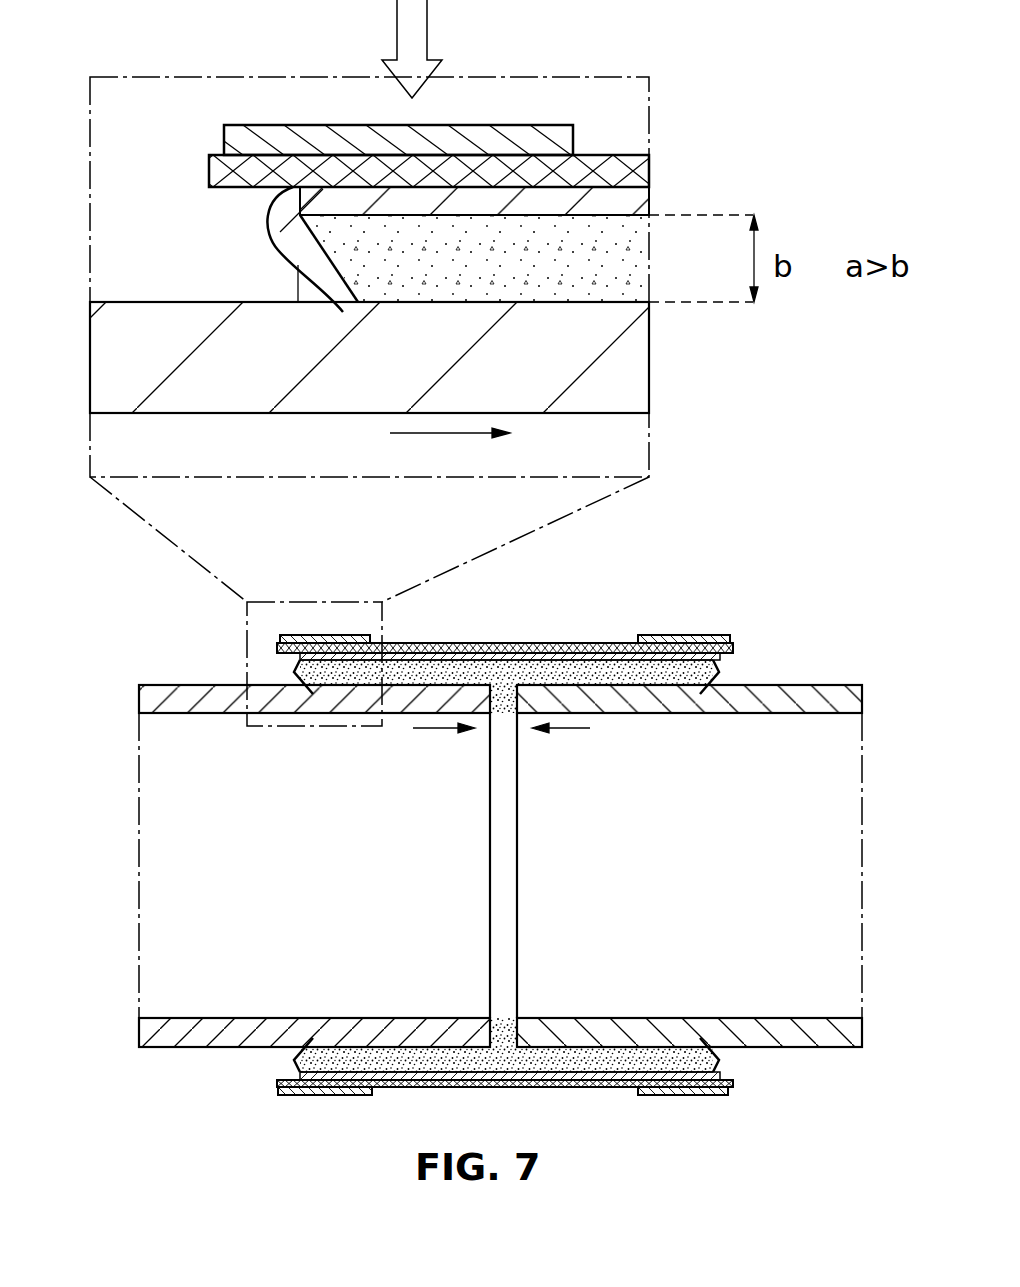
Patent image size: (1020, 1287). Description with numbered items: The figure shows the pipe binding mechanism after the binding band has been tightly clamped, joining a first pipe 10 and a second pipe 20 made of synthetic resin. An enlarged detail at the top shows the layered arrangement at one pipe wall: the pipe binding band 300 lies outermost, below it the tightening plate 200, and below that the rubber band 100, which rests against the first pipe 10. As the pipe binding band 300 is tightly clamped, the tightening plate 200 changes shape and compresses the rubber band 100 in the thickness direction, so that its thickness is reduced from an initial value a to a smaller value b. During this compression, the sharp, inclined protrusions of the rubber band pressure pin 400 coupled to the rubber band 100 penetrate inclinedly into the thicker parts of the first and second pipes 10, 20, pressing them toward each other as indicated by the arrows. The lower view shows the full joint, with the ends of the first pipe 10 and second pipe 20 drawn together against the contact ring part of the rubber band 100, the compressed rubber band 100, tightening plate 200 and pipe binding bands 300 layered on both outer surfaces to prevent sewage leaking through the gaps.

The first pipe 10 is at (108, 360).
The second pipe 20 is at (818, 690).
The rubber band 100 is at (623, 275).
The tightening plate 200 is at (648, 168).
The pipe binding band 300 is at (310, 135).
The rubber band pressure pin 400 is at (648, 200).